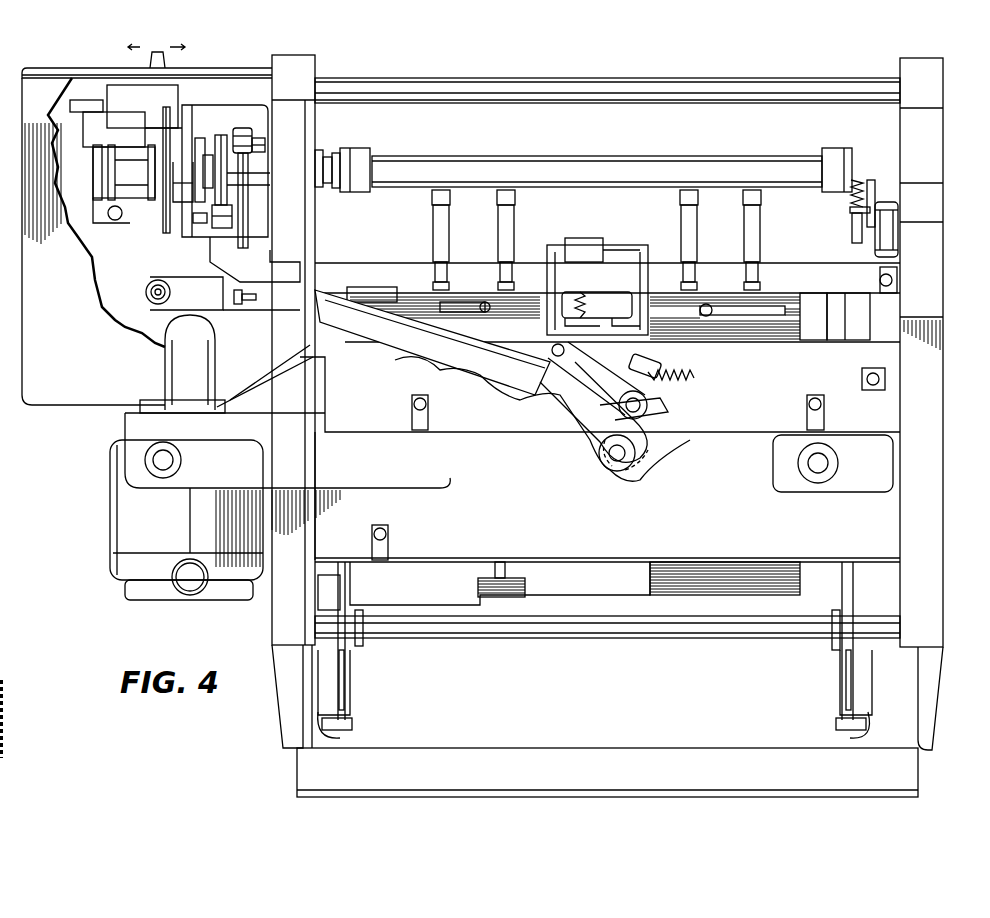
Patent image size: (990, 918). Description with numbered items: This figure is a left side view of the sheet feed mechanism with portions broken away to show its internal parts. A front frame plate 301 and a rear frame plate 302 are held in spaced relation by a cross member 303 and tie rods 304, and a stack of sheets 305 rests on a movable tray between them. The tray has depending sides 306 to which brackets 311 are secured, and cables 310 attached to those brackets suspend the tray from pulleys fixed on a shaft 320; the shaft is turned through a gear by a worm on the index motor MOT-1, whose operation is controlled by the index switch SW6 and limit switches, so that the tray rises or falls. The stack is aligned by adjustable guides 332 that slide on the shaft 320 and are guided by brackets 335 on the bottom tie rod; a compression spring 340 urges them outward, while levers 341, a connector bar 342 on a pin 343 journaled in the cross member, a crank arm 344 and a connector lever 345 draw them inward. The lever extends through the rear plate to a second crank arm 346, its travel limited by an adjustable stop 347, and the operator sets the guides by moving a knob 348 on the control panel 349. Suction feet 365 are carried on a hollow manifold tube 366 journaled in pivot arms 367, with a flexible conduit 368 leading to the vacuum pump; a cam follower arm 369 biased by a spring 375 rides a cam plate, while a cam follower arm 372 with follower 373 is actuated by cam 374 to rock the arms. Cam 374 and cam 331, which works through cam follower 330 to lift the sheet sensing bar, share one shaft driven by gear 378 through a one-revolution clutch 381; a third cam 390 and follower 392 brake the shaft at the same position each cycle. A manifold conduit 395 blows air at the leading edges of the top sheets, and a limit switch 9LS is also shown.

The front frame plate 301 is at (900, 62).
The rear frame plate 302 is at (316, 70).
The cross member 303 is at (752, 432).
The tie rods 304 is at (545, 80).
The stack of sheets 305 is at (812, 293).
The depending sides 306 is at (350, 668).
The cables 310 is at (344, 690).
The brackets 311 is at (340, 738).
The shaft 320 is at (668, 402).
The cam follower 330 is at (240, 232).
The cam 331 is at (220, 136).
The adjustable guides 332 is at (357, 290).
The brackets 335 is at (365, 645).
The compression spring 340 is at (664, 376).
The levers 341 is at (395, 360).
The connector bar 342 is at (645, 358).
The pin 343 is at (580, 368).
The crank arm 344 is at (640, 455).
The connector lever 345 is at (535, 400).
The second crank arm 346 is at (150, 285).
The adjustable stop 347 is at (234, 297).
The knob 348 is at (160, 46).
The control panel 349 is at (235, 68).
The suction feet 365 is at (497, 245).
The hollow manifold tube 366 is at (560, 153).
The pivot arms 367 is at (350, 150).
The flexible conduit 368 is at (898, 232).
The cam follower arm 369 is at (858, 230).
The cam follower arm 372 is at (262, 153).
The cam follower 373 is at (252, 133).
The cam 374 is at (250, 205).
The spring 375 is at (850, 200).
The gear 378 is at (142, 106).
The clutch 381 is at (130, 147).
The third cam 390 is at (183, 203).
The cam follower 392 is at (200, 138).
The manifold conduit 395 is at (770, 316).
The limit switch 9LS is at (597, 286).
The index switch SW6 is at (108, 85).
The index motor MOT-1 is at (112, 483).